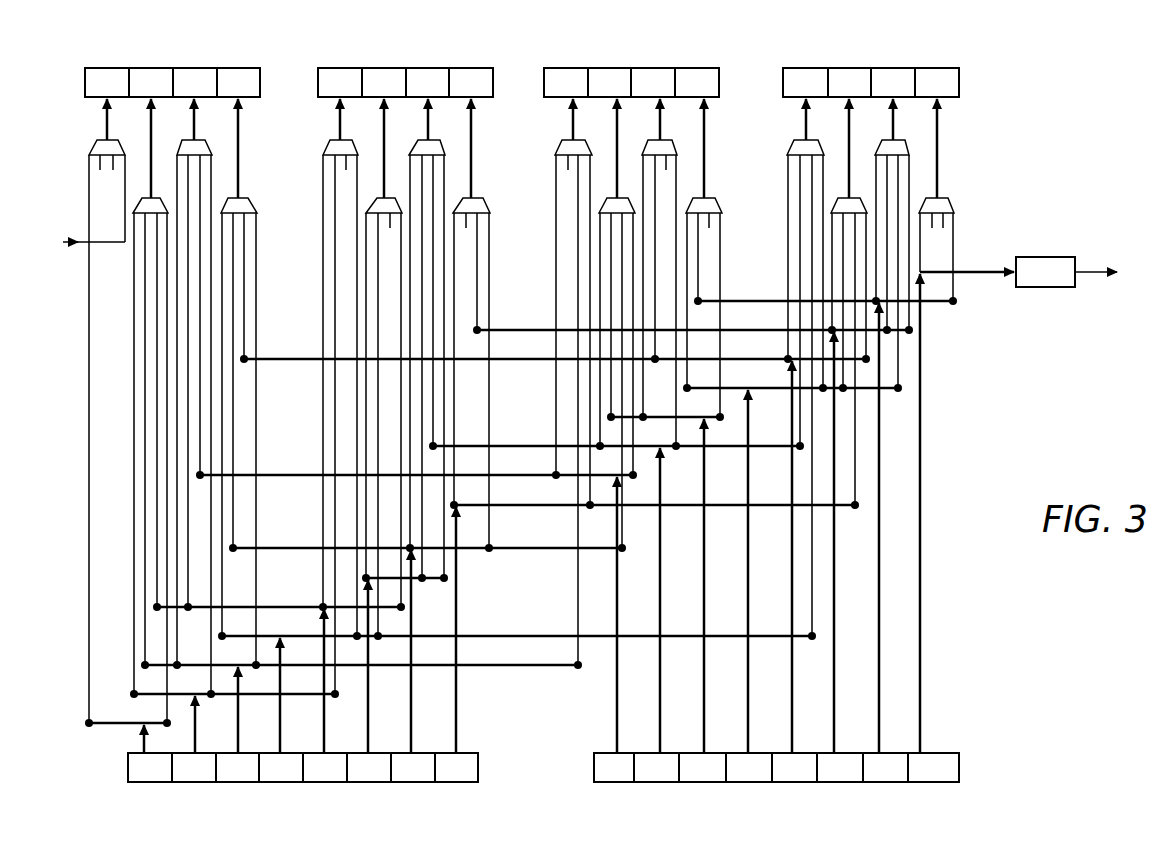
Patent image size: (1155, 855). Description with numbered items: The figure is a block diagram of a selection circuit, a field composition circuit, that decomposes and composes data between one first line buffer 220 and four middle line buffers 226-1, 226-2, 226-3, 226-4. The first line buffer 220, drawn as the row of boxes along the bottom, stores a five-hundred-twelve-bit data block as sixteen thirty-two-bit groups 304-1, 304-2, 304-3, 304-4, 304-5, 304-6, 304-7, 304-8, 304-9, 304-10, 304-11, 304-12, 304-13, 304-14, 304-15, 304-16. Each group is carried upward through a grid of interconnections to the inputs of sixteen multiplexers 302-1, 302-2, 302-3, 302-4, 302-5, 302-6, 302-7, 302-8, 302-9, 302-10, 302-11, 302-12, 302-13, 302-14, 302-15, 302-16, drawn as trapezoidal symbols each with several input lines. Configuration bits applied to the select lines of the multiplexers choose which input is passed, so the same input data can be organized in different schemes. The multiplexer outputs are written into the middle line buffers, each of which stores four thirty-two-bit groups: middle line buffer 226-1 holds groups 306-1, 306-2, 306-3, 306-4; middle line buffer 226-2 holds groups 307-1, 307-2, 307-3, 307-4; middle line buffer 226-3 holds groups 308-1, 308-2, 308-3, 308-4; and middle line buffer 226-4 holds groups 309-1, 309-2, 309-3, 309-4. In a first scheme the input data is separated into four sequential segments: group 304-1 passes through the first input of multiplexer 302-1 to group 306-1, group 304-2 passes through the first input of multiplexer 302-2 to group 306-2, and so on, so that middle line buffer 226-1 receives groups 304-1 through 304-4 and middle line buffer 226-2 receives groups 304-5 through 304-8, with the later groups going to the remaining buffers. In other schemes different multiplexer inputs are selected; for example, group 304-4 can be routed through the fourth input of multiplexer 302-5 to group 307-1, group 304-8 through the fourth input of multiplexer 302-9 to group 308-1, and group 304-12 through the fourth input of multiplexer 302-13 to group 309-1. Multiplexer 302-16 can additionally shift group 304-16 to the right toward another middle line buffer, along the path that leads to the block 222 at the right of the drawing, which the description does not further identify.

The first line buffer 220 is at (965, 751).
The output stage 222 is at (1031, 186).
The middle line buffer 226-1 is at (110, 68).
The middle line buffer 226-2 is at (337, 68).
The middle line buffer 226-3 is at (565, 68).
The middle line buffer 226-4 is at (798, 68).
The multiplexer 302-1 is at (100, 140).
The multiplexer 302-2 is at (146, 198).
The multiplexer 302-3 is at (188, 140).
The multiplexer 302-4 is at (233, 198).
The multiplexer 302-5 is at (332, 140).
The multiplexer 302-6 is at (378, 198).
The multiplexer 302-7 is at (422, 140).
The multiplexer 302-8 is at (465, 198).
The multiplexer 302-9 is at (566, 140).
The multiplexer 302-10 is at (610, 198).
The multiplexer 302-11 is at (657, 141).
The multiplexer 302-12 is at (697, 198).
The multiplexer 302-13 is at (800, 141).
The multiplexer 302-14 is at (842, 198).
The multiplexer 302-15 is at (890, 143).
The multiplexer 302-16 is at (932, 198).
The first data group 304-1 is at (150, 753).
The second data group 304-2 is at (194, 739).
The data group 304-3 is at (237, 724).
The fourth data group 304-4 is at (281, 710).
The data group 304-5 is at (325, 695).
The data group 304-6 is at (369, 681).
The data group 304-7 is at (413, 666).
The data group 304-8 is at (456, 644).
The data group 304-9 is at (614, 629).
The data group 304-10 is at (656, 615).
The data group 304-11 is at (702, 600).
The data group 304-12 is at (749, 586).
The data group 304-13 is at (794, 571).
The data group 304-14 is at (840, 557).
The data group 304-15 is at (885, 542).
The data group 304-16 is at (933, 528).
The first group of middle line buffer 226-1 306-1 is at (107, 82).
The second group of middle line buffer 226-1 306-2 is at (151, 82).
The group of middle line buffer 226-1 306-3 is at (195, 82).
The group of middle line buffer 226-1 306-4 is at (238, 82).
The first group of middle line buffer 226-2 307-1 is at (340, 82).
The second group of middle line buffer 226-2 307-2 is at (384, 82).
The group of middle line buffer 226-2 307-3 is at (427, 82).
The group of middle line buffer 226-2 307-4 is at (471, 82).
The first group of middle line buffer 226-3 308-1 is at (566, 82).
The second group of middle line buffer 226-3 308-2 is at (609, 82).
The group of middle line buffer 226-3 308-3 is at (653, 82).
The group of middle line buffer 226-3 308-4 is at (697, 82).
The first group of middle line buffer 226-4 309-1 is at (805, 82).
The second group of middle line buffer 226-4 309-2 is at (849, 82).
The group of middle line buffer 226-4 309-3 is at (893, 82).
The group of middle line buffer 226-4 309-4 is at (937, 82).